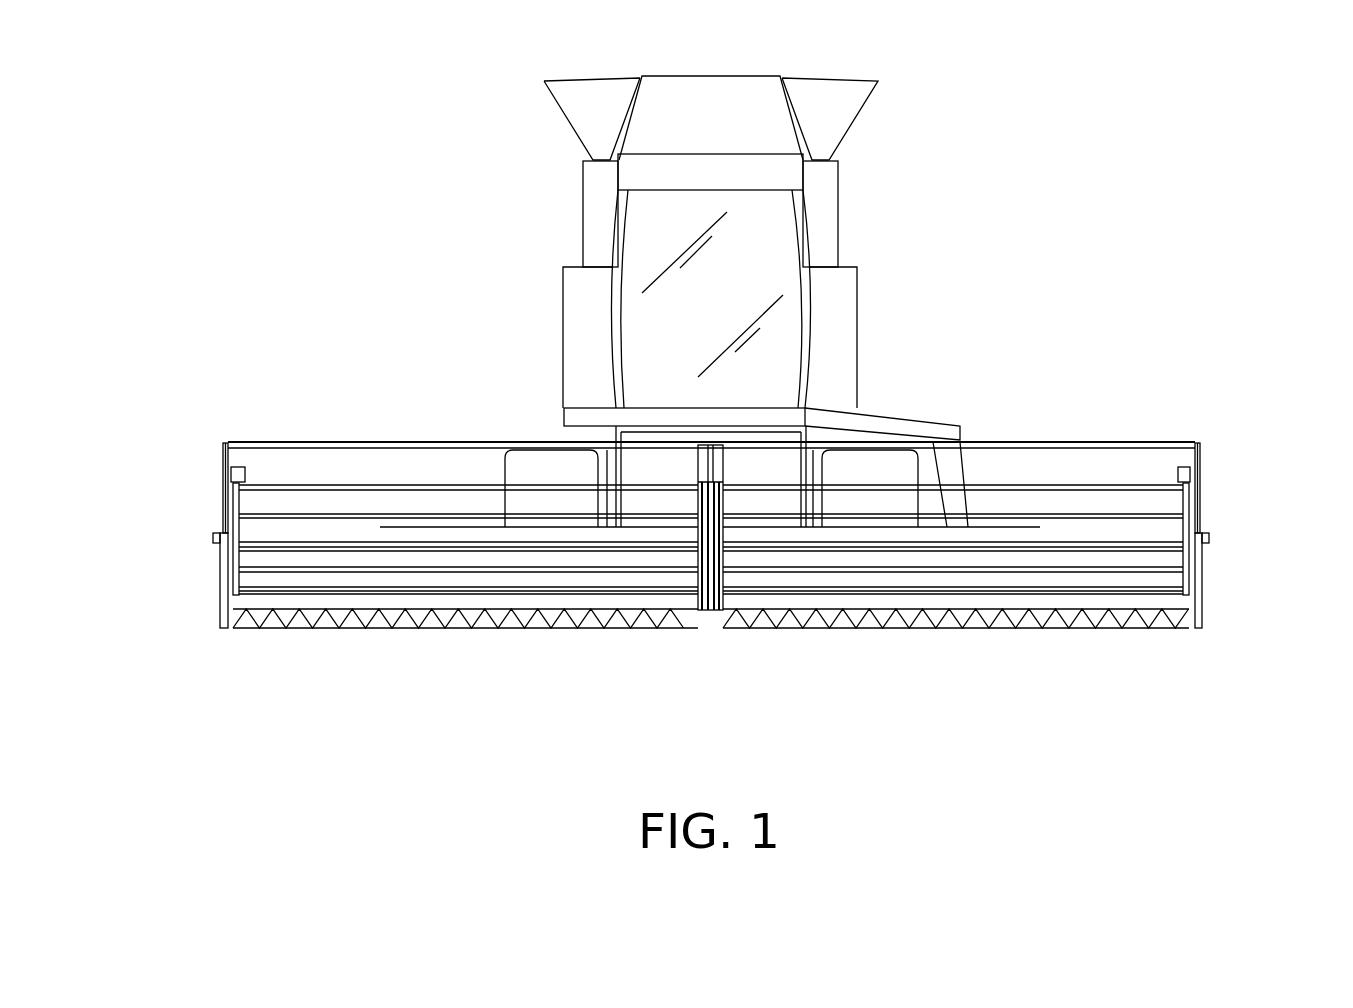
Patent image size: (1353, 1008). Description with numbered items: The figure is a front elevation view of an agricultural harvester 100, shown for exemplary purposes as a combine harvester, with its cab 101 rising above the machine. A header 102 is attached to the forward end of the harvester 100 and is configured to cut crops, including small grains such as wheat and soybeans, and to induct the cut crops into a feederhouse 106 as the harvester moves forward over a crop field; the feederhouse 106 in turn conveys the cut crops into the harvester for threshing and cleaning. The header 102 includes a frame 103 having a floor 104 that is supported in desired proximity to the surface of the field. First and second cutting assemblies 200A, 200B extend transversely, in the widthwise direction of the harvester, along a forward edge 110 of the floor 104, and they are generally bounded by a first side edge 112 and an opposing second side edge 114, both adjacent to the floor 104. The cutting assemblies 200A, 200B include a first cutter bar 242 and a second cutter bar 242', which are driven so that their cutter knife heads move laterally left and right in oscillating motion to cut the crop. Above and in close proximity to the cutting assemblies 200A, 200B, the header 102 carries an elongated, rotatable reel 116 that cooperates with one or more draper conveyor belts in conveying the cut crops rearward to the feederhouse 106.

The agricultural harvester 100 is at (701, 415).
The cab 101 is at (848, 235).
The header 102 is at (701, 547).
The frame 103 is at (1148, 442).
The floor 104 is at (415, 608).
The feederhouse 106 is at (760, 450).
The forward edge 110 is at (400, 628).
The first side edge 112 is at (220, 600).
The second side edge 114 is at (1203, 603).
The rotatable reel 116 is at (1022, 548).
The first cutter bar 242 is at (458, 641).
The second cutter bar 242' is at (956, 641).
The first cutting assembly 200A is at (700, 672).
The second cutting assembly 200B is at (1207, 672).